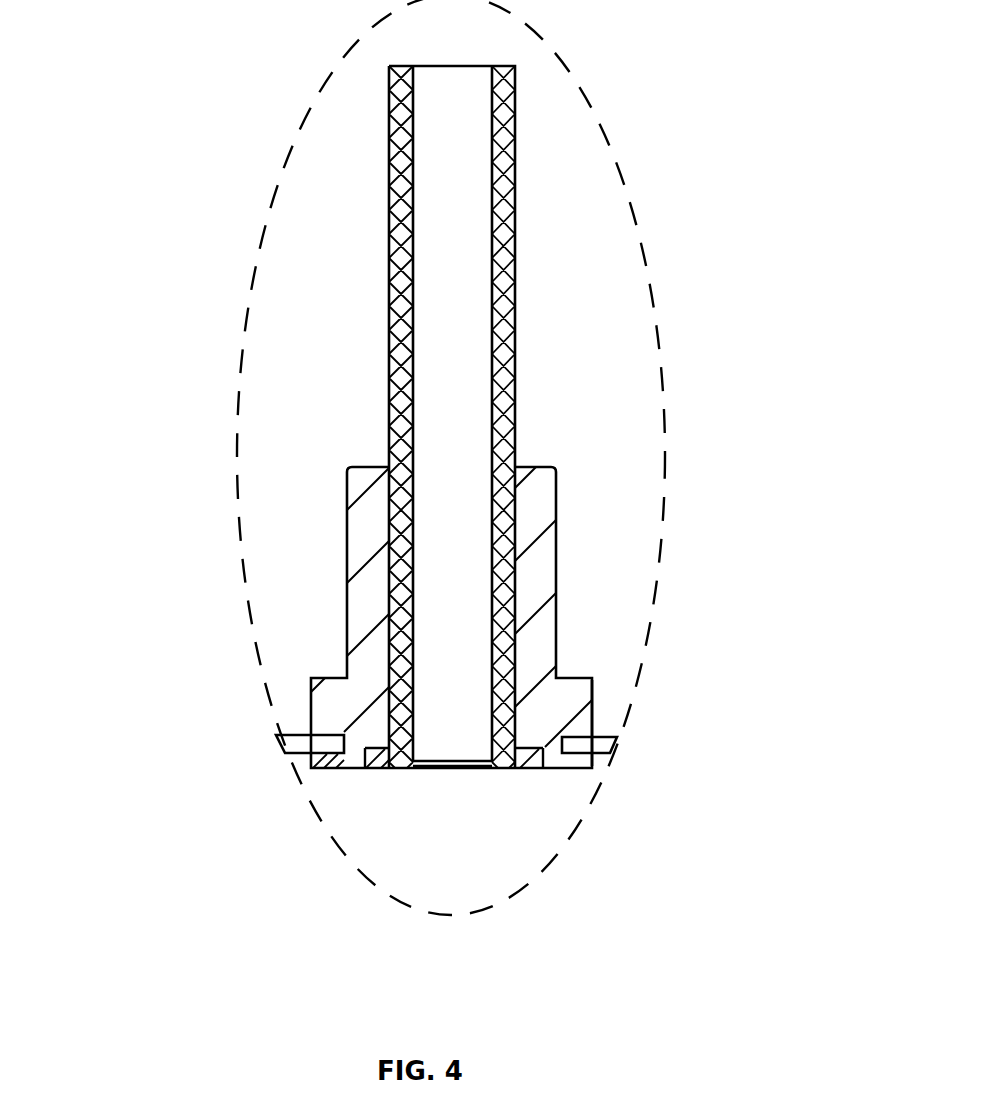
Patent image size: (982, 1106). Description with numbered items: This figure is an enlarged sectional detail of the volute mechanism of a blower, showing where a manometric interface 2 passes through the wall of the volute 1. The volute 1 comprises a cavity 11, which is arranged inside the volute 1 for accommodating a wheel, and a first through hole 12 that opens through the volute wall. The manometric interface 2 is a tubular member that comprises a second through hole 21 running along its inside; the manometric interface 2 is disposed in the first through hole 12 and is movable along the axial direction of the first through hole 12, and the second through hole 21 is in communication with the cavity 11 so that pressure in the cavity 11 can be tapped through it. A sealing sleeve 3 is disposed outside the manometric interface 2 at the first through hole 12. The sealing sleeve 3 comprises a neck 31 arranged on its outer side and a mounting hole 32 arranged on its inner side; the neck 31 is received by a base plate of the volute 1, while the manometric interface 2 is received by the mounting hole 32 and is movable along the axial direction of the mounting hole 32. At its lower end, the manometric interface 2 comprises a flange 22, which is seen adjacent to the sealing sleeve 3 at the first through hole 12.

The volute 1 is at (298, 745).
The cavity 11 is at (437, 825).
The first through hole 12 is at (338, 762).
The manometric interface 2 is at (515, 408).
The second through hole 21 is at (458, 283).
The flange 22 is at (522, 768).
The sealing sleeve 3 is at (348, 578).
The neck 31 is at (592, 708).
The mounting hole 32 is at (389, 520).